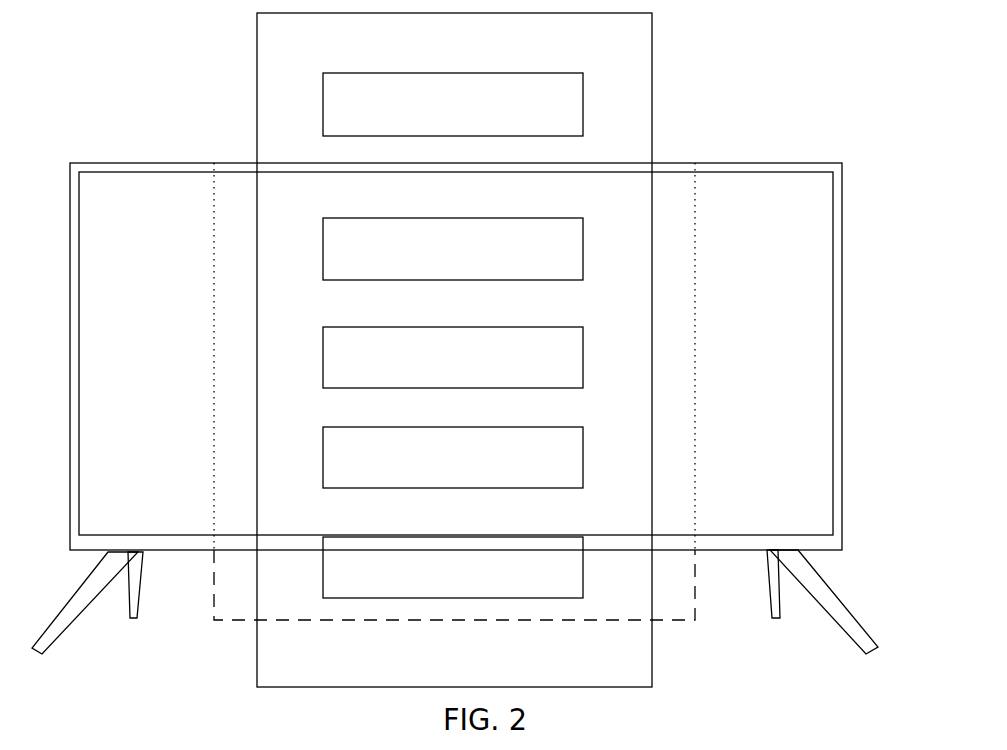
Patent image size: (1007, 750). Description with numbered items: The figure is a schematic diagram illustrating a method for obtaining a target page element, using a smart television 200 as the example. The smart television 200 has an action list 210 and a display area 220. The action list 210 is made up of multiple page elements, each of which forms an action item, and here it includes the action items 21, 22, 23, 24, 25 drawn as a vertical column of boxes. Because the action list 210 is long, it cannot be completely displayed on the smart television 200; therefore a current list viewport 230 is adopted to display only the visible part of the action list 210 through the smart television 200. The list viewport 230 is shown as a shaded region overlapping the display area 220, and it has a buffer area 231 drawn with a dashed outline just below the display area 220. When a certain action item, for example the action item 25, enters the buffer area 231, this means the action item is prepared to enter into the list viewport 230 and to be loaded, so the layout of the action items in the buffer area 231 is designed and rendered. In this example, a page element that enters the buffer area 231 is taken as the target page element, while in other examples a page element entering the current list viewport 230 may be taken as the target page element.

The smart television 200 is at (843, 297).
The display area 220 is at (768, 237).
The list viewport 230 is at (672, 192).
The buffer area 231 is at (268, 602).
The action list 210 is at (454, 350).
The action item 21 is at (453, 104).
The action item 22 is at (453, 249).
The action item 23 is at (453, 357).
The action item 24 is at (453, 457).
The action item 25 is at (453, 567).